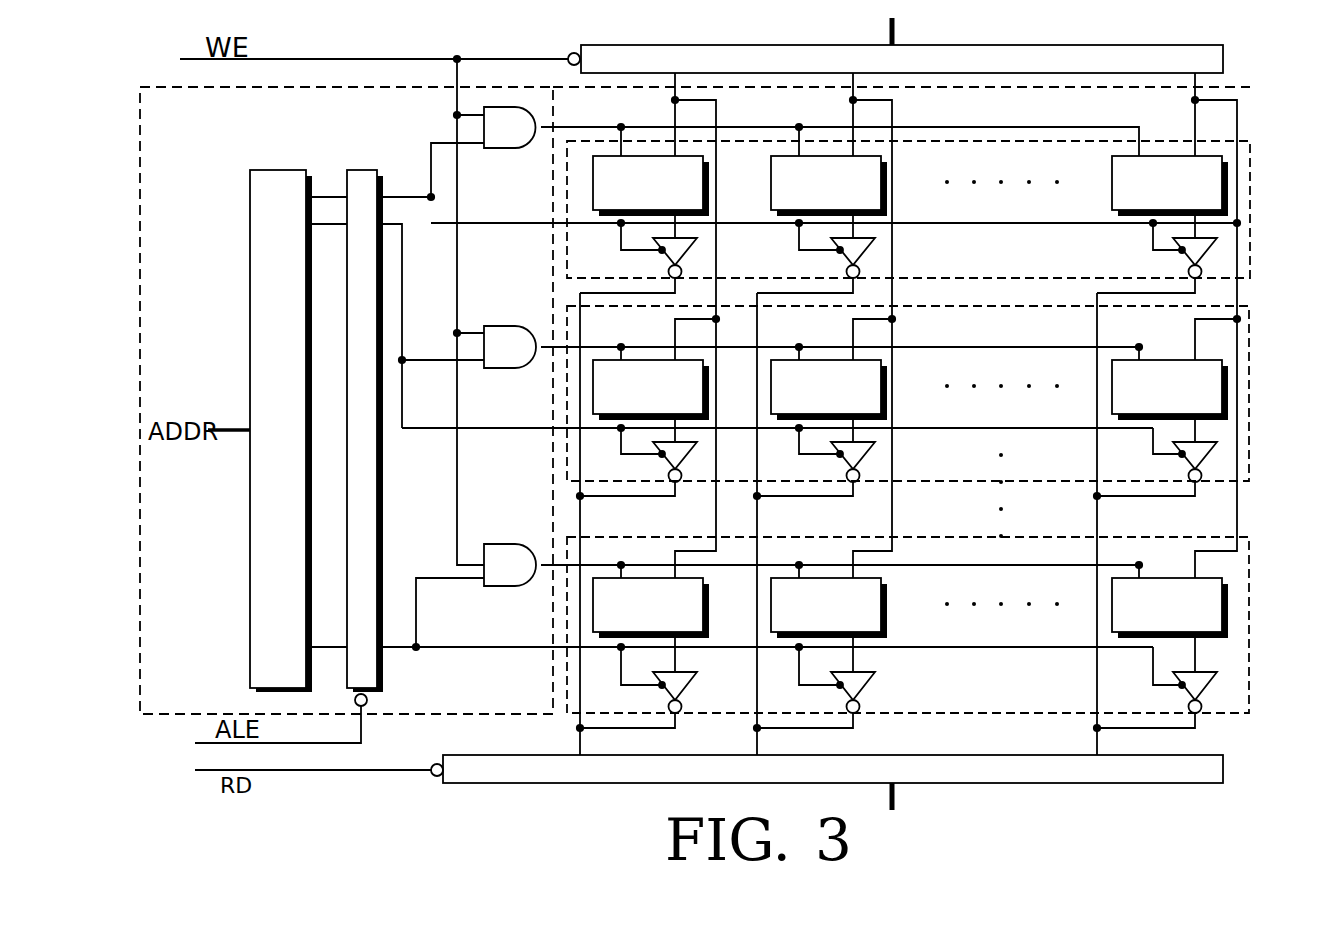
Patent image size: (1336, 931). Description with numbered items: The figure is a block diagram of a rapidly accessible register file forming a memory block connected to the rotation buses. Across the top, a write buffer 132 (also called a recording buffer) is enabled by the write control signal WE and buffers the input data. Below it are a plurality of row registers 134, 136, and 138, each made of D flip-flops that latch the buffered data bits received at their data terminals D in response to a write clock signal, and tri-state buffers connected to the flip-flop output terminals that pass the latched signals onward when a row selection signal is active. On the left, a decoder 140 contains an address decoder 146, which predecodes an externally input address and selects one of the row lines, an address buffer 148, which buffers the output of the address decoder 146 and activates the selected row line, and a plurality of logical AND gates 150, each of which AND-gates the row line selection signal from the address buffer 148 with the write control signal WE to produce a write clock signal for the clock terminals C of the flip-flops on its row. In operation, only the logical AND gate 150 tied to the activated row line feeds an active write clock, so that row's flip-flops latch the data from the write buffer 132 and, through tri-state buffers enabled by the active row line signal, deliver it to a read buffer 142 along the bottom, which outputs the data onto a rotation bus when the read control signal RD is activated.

The write buffer 132 is at (1225, 58).
The row register 134 is at (1252, 180).
The row register 136 is at (1252, 385).
The row register 138 is at (1252, 603).
The decoder 140 is at (140, 358).
The read buffer 142 is at (1225, 767).
The address decoder 146 is at (278, 170).
The address buffer 148 is at (361, 170).
The logical AND gates 150 is at (512, 148).